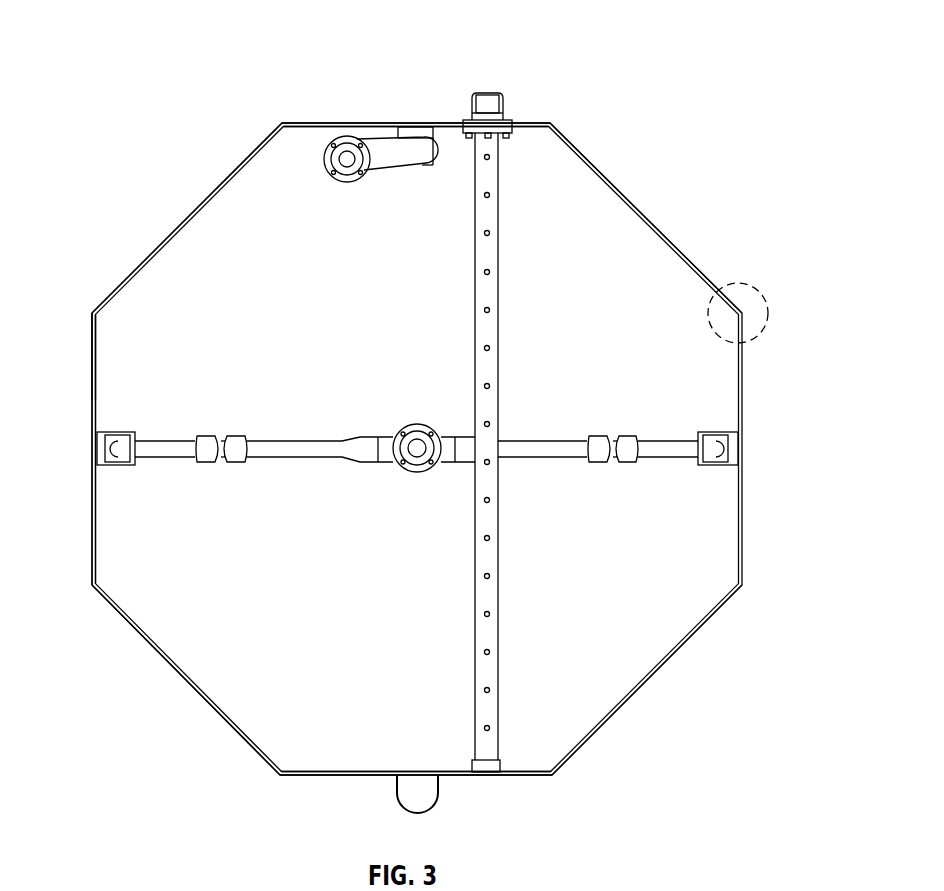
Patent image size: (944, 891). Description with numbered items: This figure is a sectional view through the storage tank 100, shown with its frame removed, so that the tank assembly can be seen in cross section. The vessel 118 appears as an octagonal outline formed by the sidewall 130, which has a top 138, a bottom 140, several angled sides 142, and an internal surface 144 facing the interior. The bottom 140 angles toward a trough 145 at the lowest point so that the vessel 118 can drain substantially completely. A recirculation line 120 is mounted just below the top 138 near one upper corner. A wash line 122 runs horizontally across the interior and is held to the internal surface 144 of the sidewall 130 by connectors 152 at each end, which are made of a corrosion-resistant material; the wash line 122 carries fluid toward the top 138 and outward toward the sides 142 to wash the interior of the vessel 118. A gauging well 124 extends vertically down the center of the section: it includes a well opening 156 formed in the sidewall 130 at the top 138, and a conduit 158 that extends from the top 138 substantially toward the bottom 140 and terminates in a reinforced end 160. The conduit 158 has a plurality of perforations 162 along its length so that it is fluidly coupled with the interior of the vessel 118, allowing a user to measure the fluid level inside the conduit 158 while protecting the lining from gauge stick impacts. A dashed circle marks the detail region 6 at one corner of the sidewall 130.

The storage tank 100 is at (166, 58).
The vessel 118 is at (600, 170).
The sides 142 is at (178, 228).
The top 138 is at (345, 123).
The bottom 140 is at (320, 776).
The internal surface 144 is at (100, 347).
The sidewall 130 is at (92, 547).
The detail area of FIG. 6 is at (745, 285).
The recirculation line 120 is at (390, 162).
The gauging well 124 is at (526, 446).
The conduit 158 is at (498, 380).
The perforations 162 is at (498, 543).
The well opening 156 is at (497, 95).
The reinforced end 160 is at (508, 772).
The trough 145 is at (413, 790).
The wash line 122 is at (322, 456).
The connectors 152 is at (118, 467).